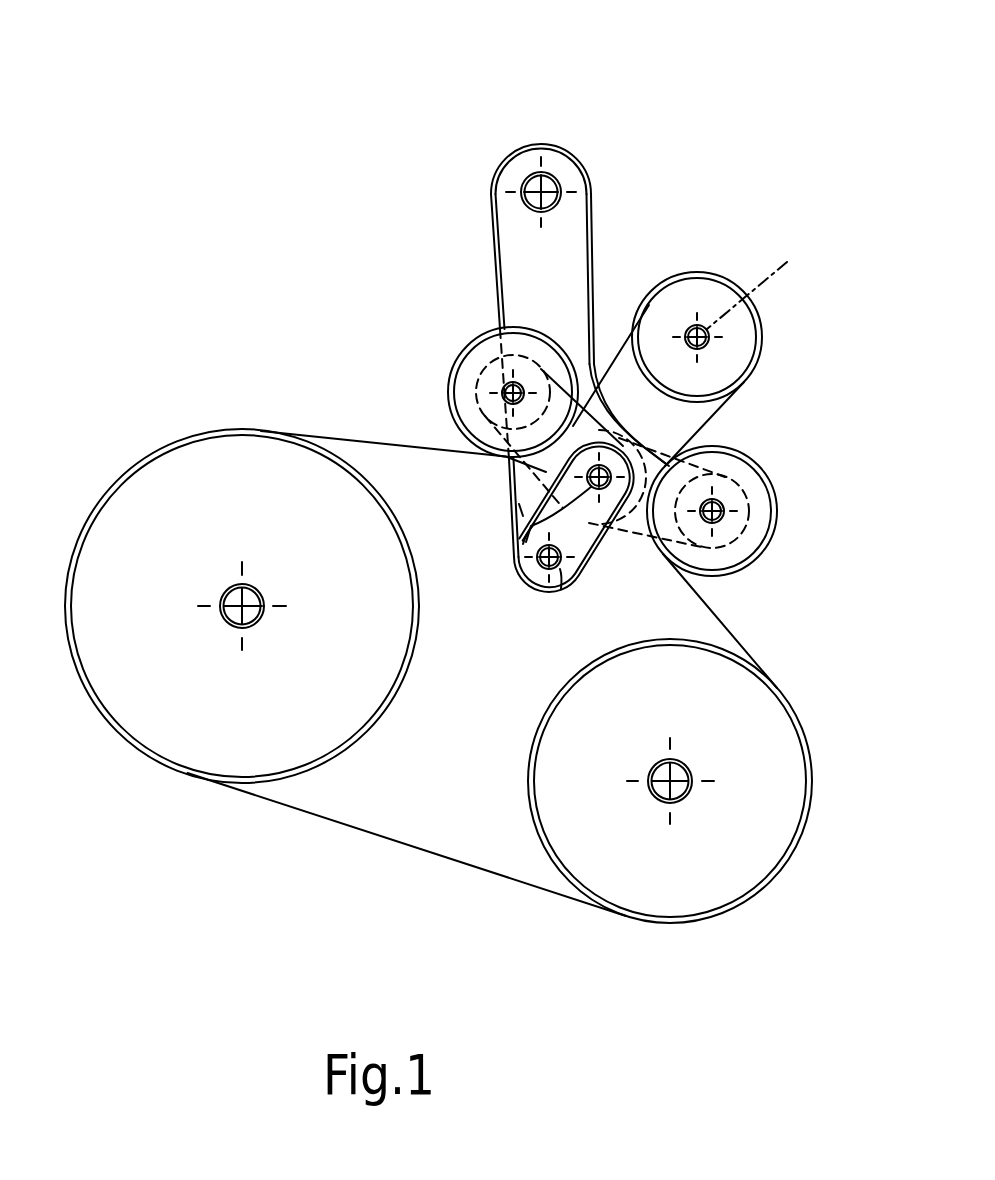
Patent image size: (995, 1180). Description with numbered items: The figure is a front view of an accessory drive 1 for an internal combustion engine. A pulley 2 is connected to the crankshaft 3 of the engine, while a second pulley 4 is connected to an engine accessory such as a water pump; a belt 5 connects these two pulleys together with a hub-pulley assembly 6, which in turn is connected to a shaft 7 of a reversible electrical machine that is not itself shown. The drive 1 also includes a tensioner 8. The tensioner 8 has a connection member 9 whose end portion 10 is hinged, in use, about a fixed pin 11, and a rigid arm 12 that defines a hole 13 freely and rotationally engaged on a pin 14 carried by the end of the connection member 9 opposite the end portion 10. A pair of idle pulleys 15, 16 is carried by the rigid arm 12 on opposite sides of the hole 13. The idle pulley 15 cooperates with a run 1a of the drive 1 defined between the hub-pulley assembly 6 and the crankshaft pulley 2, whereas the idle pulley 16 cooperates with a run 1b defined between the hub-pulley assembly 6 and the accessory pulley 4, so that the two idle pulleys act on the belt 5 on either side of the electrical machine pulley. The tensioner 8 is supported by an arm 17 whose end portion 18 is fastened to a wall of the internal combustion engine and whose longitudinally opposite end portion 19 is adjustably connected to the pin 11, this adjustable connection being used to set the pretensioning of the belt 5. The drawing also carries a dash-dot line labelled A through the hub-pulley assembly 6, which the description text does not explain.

The accessory drive 1 is at (333, 343).
The run 1a is at (728, 624).
The run 1b is at (413, 428).
The pulley 2 is at (649, 889).
The crankshaft 3 is at (674, 758).
The pulley 4 is at (156, 464).
The belt 5 is at (371, 828).
The hub-pulley assembly 6 is at (700, 264).
The shaft 7 is at (681, 317).
The tensioner 8 is at (640, 440).
The connection member 9 is at (597, 519).
The end portion 10 is at (536, 562).
The fixed pin 11 is at (553, 581).
The rigid arm 12 is at (533, 454).
The hole 13 is at (515, 508).
The pin 14 is at (523, 521).
The idle pulley 15 is at (762, 516).
The idle pulley 16 is at (460, 352).
The arm 17 is at (503, 286).
The end portion 18 is at (524, 159).
The end portion 19 is at (511, 498).
The axis A is at (775, 257).